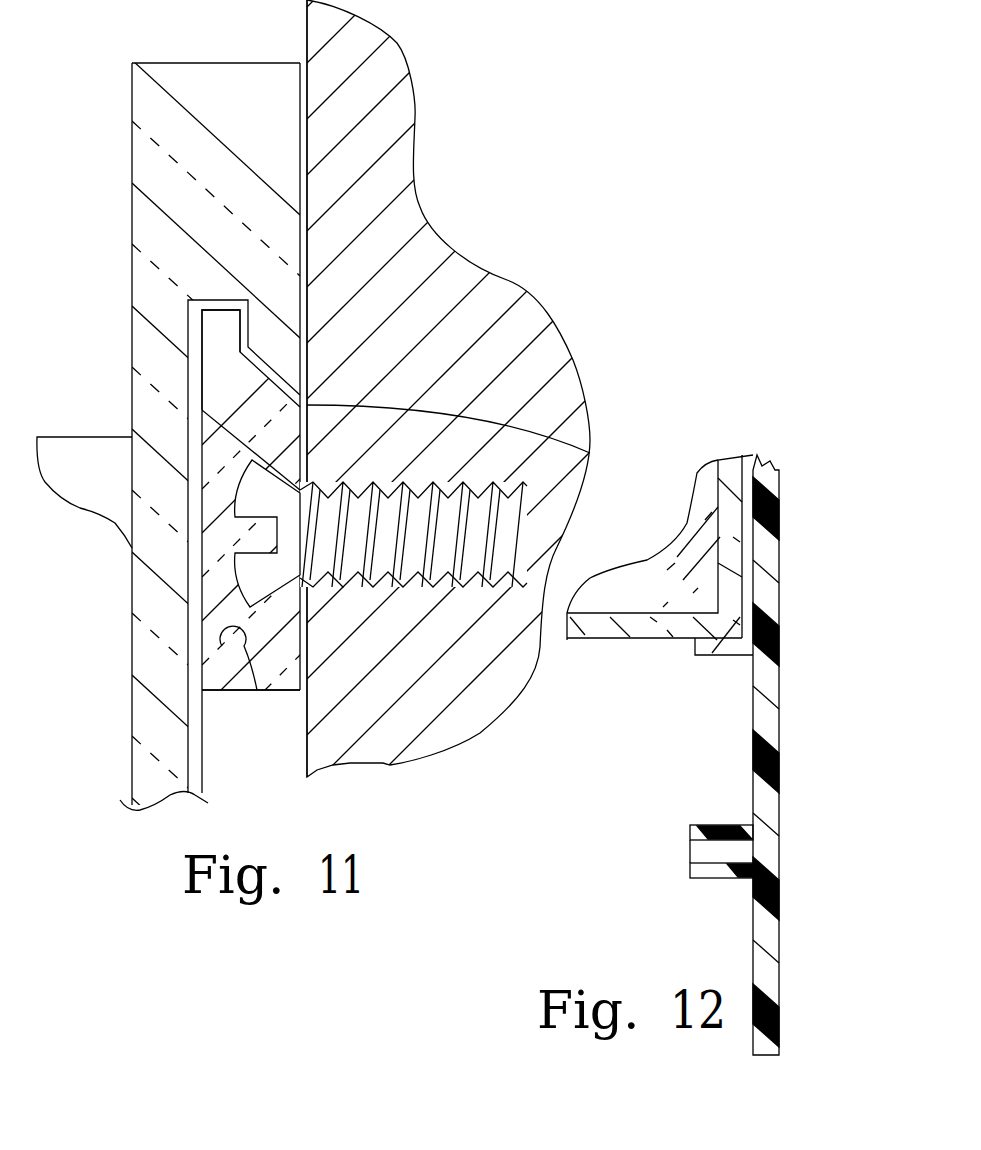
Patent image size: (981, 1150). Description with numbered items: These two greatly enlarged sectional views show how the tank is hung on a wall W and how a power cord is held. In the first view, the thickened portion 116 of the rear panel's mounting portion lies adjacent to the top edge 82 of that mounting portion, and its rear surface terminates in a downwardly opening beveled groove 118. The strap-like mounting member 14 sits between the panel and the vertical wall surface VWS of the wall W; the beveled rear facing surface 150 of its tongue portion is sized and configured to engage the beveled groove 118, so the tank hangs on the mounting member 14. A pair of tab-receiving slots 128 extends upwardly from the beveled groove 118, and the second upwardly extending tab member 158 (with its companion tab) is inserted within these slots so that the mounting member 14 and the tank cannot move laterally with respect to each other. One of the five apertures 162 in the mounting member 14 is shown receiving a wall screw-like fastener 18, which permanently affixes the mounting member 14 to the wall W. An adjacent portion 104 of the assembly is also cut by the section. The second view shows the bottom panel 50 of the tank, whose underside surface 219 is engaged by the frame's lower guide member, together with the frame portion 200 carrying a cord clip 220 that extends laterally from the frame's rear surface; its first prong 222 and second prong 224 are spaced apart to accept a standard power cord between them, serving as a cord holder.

In FIG. 11, the mounting member 14 is at (286, 700).
In FIG. 11, the wall screw-like fastener 18 is at (510, 527).
In FIG. 12, the bottom panel 50 is at (596, 606).
In FIG. 11, the top edge 82 is at (184, 63).
In FIG. 11, the adjacent panel 104 is at (54, 437).
In FIG. 11, the thickened portion 116 is at (104, 129).
In FIG. 11, the beveled groove 118 is at (507, 290).
In FIG. 11, the tab-receiving slots 128 is at (188, 301).
In FIG. 11, the beveled rear facing surface 150 is at (590, 452).
In FIG. 11, the second upwardly extending tab member 158 is at (208, 333).
In FIG. 11, the apertures 162 is at (257, 690).
In FIG. 12, the mounting strip 200 is at (785, 680).
In FIG. 12, the underside surface 219 is at (732, 655).
In FIG. 12, the cord clips 220 is at (696, 904).
In FIG. 12, the first prong 222 is at (717, 824).
In FIG. 12, the second prong 224 is at (712, 864).
In FIG. 11, the wall W is at (592, 385).
In FIG. 11, the vertical wall surface VWS is at (301, 63).